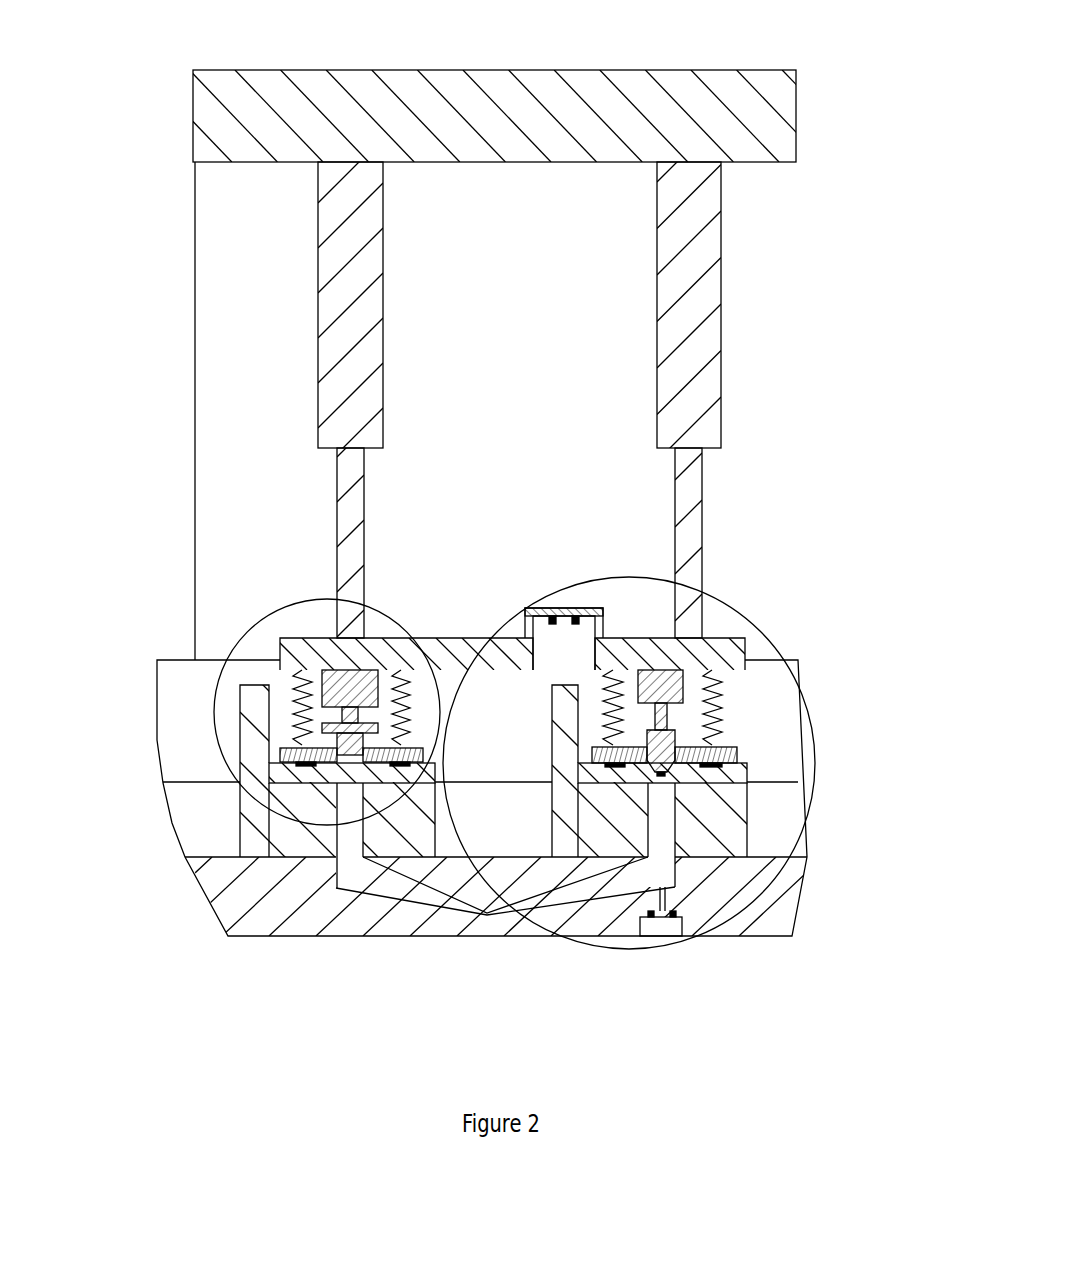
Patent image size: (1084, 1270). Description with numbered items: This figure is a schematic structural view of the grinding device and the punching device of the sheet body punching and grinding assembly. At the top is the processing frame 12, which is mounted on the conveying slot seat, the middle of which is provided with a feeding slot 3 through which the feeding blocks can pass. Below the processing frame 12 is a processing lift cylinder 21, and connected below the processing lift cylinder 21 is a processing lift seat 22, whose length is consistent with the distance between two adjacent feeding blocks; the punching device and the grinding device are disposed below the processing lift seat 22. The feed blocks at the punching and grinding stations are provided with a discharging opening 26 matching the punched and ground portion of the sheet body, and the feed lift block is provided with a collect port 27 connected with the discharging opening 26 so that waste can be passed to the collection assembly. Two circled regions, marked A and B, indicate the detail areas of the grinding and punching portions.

The processing frame 12 is at (637, 128).
The processing lift cylinder 21 is at (700, 350).
The processing lift seat 22 is at (438, 652).
The feeding slot 3 is at (205, 802).
The discharging opening 26 is at (300, 857).
The collect port 27 is at (423, 908).
The detail region A is at (720, 607).
The detail region B is at (247, 630).